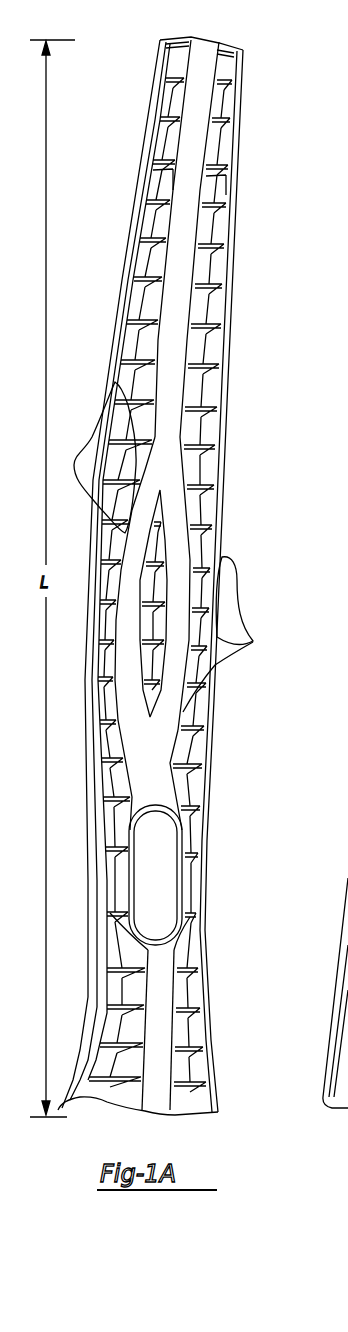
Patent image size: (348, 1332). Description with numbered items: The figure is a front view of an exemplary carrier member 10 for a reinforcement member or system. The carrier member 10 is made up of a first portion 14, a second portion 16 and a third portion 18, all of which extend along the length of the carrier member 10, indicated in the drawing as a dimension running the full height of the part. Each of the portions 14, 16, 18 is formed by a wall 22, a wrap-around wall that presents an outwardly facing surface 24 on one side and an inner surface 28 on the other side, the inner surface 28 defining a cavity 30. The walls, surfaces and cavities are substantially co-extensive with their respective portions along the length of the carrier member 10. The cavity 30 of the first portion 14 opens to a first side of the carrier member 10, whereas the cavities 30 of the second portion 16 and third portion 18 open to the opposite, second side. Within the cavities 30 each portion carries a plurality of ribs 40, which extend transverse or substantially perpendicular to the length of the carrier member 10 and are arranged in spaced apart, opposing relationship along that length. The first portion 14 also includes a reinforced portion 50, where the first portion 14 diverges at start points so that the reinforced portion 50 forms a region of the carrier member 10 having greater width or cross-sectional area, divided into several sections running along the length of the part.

The carrier member 10 is at (262, 77).
The first portion 14 is at (175, 267).
The second portion 16 is at (148, 260).
The third portion 18 is at (205, 228).
The wall 22 is at (162, 432).
The outwardly facing surface 24 is at (175, 468).
The inner surface 28 is at (172, 113).
The cavity 30 is at (150, 182).
The ribs 40 is at (123, 470).
The reinforced portion 50 is at (122, 750).